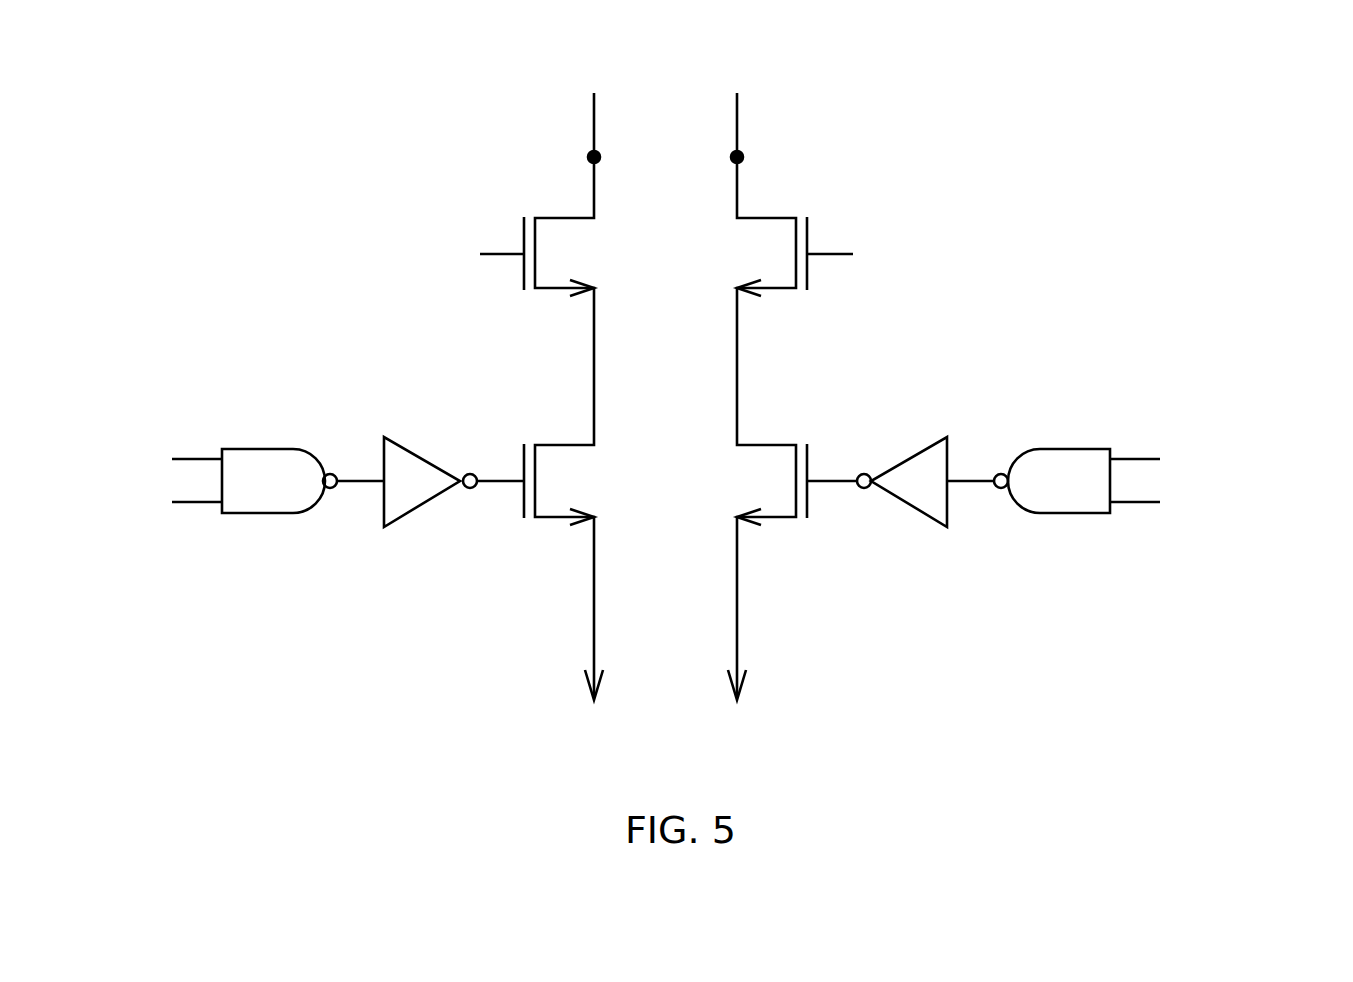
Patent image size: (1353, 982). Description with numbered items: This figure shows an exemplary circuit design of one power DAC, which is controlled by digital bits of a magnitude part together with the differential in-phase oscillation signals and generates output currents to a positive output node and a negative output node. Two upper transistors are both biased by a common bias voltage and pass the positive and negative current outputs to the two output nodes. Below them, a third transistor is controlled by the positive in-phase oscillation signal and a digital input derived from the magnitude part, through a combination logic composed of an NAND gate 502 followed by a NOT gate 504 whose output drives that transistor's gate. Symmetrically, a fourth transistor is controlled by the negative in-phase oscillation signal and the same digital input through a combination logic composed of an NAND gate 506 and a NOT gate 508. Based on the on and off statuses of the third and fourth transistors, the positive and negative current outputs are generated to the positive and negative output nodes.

The NAND gate 502 is at (257, 449).
The NOT gate 504 is at (412, 447).
The NAND gate 506 is at (1076, 449).
The NOT gate 508 is at (922, 447).